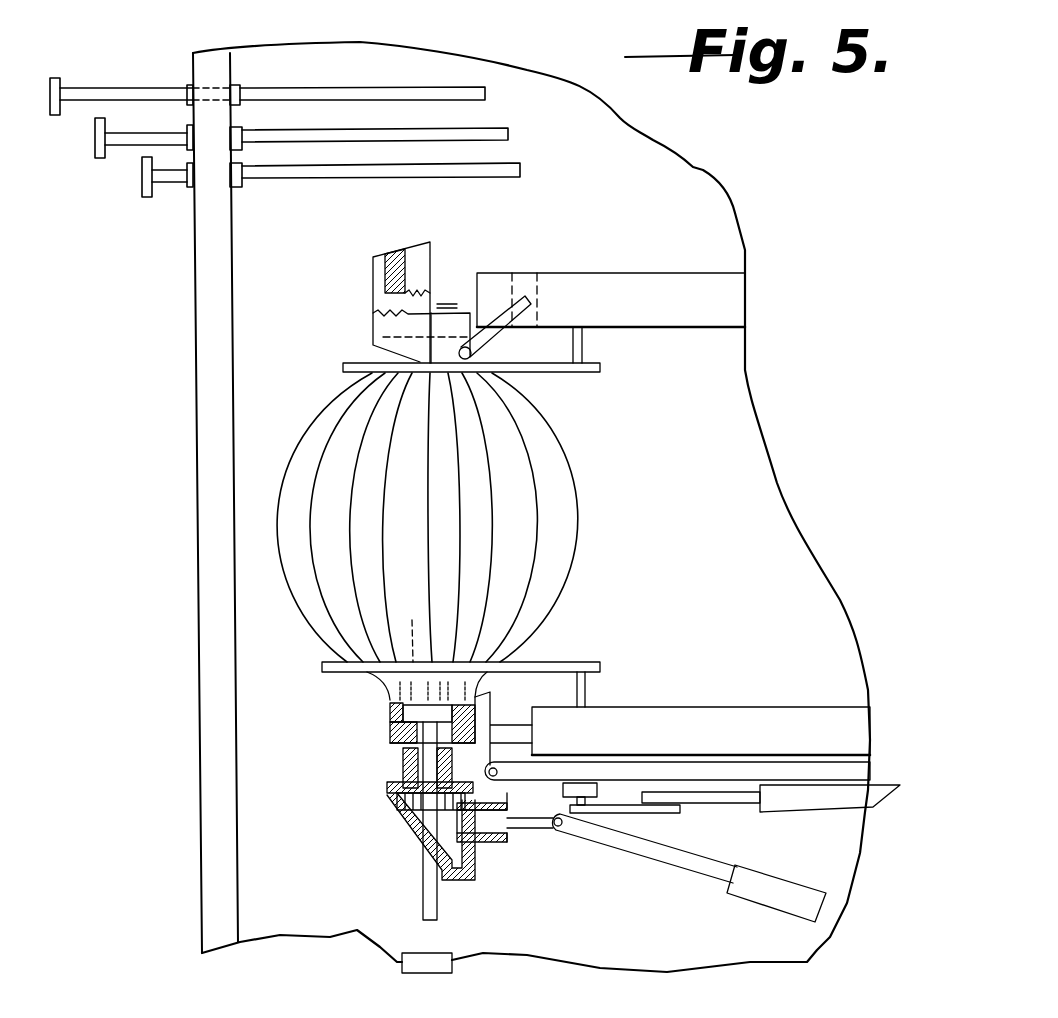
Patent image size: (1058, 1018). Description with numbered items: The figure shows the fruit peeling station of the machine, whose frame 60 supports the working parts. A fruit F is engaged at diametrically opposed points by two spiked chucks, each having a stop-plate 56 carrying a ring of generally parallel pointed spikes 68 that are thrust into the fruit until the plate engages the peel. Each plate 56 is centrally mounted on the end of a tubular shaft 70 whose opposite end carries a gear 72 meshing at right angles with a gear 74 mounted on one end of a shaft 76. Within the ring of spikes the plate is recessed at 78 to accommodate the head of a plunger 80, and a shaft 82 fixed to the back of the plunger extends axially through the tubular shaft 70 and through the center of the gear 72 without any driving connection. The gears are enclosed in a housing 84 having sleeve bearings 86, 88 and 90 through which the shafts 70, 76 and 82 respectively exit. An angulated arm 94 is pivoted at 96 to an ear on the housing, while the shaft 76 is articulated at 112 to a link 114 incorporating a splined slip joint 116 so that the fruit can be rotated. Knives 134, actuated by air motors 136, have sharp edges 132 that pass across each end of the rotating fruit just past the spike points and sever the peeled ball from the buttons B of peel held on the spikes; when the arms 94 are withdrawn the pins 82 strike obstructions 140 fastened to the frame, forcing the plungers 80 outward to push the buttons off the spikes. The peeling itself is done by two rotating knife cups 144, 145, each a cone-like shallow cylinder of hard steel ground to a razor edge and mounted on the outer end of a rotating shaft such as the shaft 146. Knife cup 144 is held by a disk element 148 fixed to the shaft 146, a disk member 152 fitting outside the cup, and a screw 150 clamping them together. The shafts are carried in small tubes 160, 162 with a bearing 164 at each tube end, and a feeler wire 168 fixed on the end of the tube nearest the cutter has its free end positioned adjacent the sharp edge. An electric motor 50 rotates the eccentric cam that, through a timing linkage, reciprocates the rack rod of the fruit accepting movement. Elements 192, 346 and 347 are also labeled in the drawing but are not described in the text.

The electric motor 50 is at (390, 698).
The stop-plate 56 is at (380, 748).
The frame 60 is at (208, 814).
The spikes 68 is at (410, 630).
The tubular shaft 70 is at (388, 750).
The gear 72 is at (405, 808).
The gear 74 is at (480, 847).
The shaft 76 is at (533, 830).
The recess 78 is at (417, 715).
The plunger 80 is at (390, 727).
The shaft 82 is at (390, 792).
The housing 84 is at (463, 877).
The sleeve bearing 86 is at (490, 768).
The sleeve bearing 88 is at (507, 805).
The sleeve bearing 90 is at (432, 852).
The angulated arm 94 is at (708, 738).
The pivot 96 is at (505, 772).
The articulation 112 is at (558, 833).
The link 114 is at (673, 865).
The splined slip joint 116 is at (773, 910).
The sharp edges 132 is at (540, 375).
The knives 134 is at (585, 375).
The air motors 136 is at (790, 803).
The obstructions 140 is at (427, 960).
The knife cup 144 is at (442, 255).
The knife cup 145 is at (490, 700).
The rotating shaft 146 is at (427, 247).
The disk element 148 is at (385, 275).
The screw 150 is at (385, 303).
The disk member 152 is at (413, 250).
The tube 160 is at (690, 328).
The tube 162 is at (708, 712).
The bearing 164 is at (540, 272).
The feeler wire 168 is at (485, 347).
The connecting bar 192 is at (498, 762).
The spring 346 is at (453, 297).
The connector 347 is at (522, 737).
The buttons of peel B is at (370, 367).
The fruit F is at (313, 622).